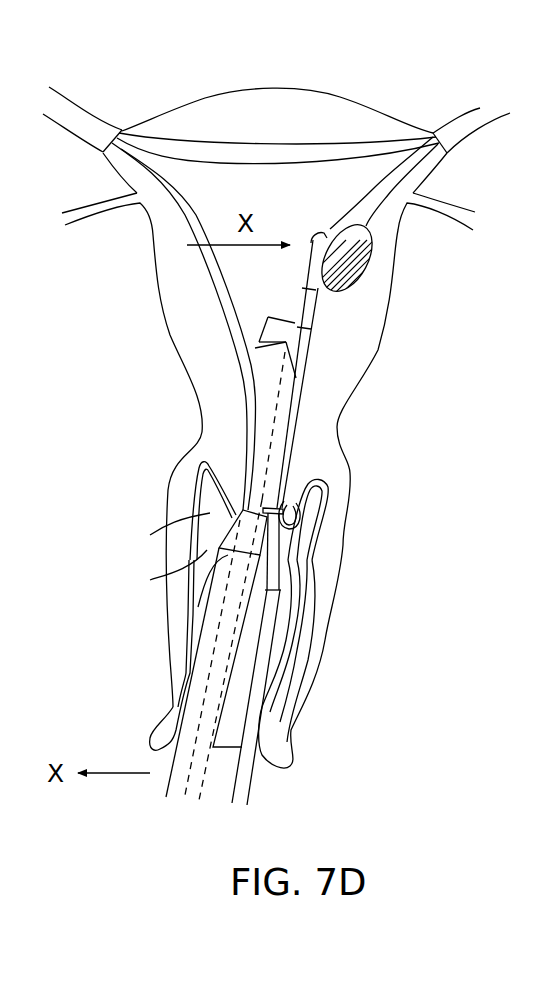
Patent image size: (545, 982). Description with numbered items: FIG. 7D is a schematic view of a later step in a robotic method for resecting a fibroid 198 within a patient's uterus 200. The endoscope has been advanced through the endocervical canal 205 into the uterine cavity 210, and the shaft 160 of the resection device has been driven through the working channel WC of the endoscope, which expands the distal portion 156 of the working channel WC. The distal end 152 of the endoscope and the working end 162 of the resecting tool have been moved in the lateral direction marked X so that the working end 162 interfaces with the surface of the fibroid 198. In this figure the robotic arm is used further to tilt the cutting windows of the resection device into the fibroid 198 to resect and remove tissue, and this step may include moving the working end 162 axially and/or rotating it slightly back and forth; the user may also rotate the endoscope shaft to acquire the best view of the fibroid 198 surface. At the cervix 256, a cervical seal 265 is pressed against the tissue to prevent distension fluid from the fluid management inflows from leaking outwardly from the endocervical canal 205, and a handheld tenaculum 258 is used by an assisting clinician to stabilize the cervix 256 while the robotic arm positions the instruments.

The uterus 200 is at (376, 78).
The working end 162 is at (312, 236).
The fibroid 198 is at (348, 262).
The uterine cavity 210 is at (247, 268).
The distal end 152 is at (258, 342).
The distal portion 156 is at (280, 378).
The working channel WC is at (283, 398).
The shaft 160 is at (300, 348).
The endocervical canal 205 is at (285, 458).
The cervix 256 is at (240, 512).
The cervical seal 265 is at (222, 550).
The tenaculum 258 is at (273, 610).